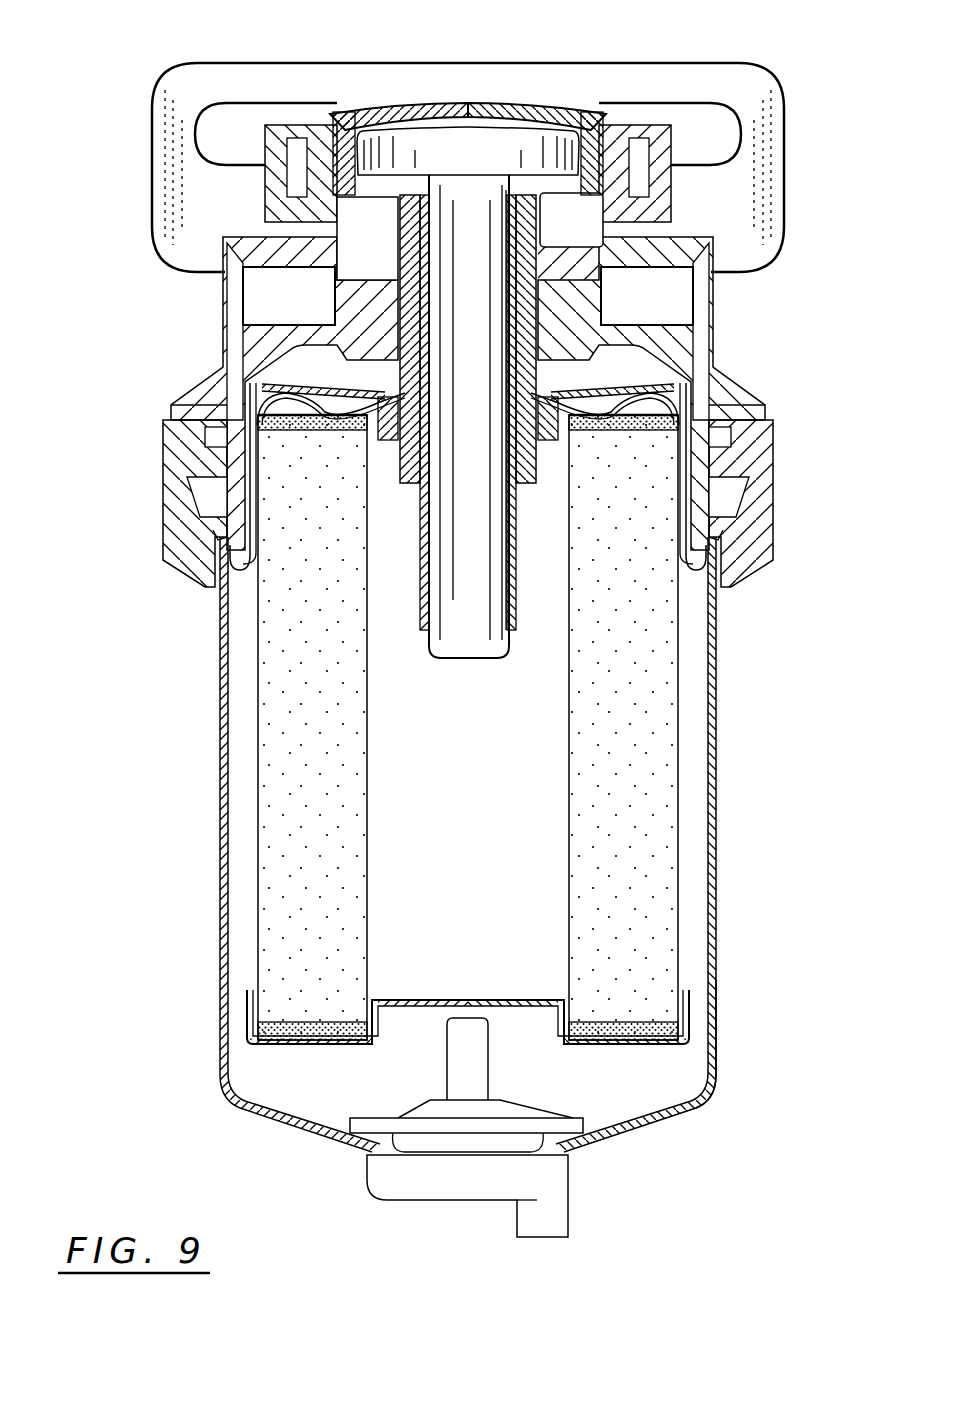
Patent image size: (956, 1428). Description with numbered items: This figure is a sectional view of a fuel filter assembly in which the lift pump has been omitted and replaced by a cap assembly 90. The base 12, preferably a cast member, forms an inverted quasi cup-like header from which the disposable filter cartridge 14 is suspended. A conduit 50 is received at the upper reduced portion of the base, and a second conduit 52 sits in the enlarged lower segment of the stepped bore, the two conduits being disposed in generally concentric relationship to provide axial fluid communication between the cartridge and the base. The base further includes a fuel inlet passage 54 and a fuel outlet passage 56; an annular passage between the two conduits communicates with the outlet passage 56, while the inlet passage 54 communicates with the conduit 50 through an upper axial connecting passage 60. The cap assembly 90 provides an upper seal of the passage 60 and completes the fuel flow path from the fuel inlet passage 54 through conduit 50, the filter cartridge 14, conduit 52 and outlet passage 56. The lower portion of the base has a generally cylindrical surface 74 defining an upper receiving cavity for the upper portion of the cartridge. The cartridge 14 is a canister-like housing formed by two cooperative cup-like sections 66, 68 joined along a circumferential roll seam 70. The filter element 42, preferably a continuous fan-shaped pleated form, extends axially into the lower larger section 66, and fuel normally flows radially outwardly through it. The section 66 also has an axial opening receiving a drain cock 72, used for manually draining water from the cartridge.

The base 12 is at (725, 362).
The disposable filter cartridge 14 is at (720, 848).
The filter element 42 is at (328, 796).
The conduit 50 is at (520, 614).
The second conduit 52 is at (547, 478).
The fuel inlet passage 54 is at (650, 292).
The fuel outlet passage 56 is at (262, 298).
The upper axial connecting passage 60 is at (386, 236).
The lower can section 66 is at (720, 1068).
The upper can section 68 is at (260, 500).
The circumferential roll seam 70 is at (197, 512).
The drain cock 72 is at (570, 1194).
The cylindrical surface 74 is at (693, 500).
The cap assembly 90 is at (509, 114).